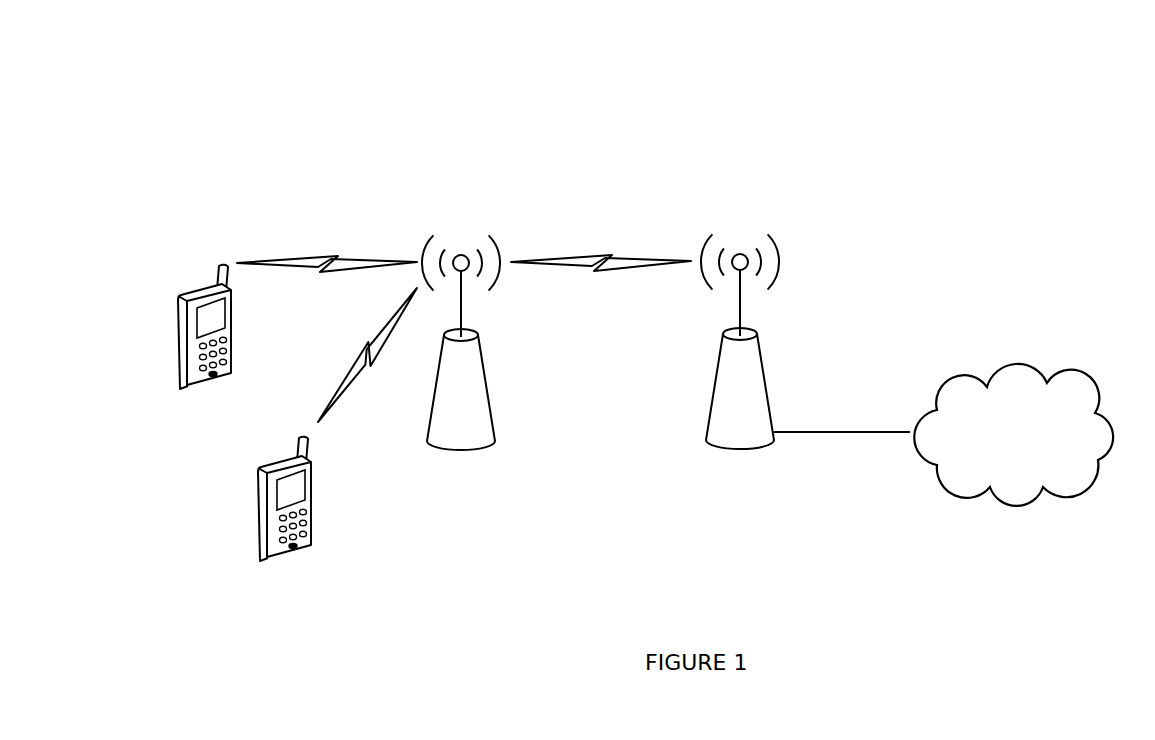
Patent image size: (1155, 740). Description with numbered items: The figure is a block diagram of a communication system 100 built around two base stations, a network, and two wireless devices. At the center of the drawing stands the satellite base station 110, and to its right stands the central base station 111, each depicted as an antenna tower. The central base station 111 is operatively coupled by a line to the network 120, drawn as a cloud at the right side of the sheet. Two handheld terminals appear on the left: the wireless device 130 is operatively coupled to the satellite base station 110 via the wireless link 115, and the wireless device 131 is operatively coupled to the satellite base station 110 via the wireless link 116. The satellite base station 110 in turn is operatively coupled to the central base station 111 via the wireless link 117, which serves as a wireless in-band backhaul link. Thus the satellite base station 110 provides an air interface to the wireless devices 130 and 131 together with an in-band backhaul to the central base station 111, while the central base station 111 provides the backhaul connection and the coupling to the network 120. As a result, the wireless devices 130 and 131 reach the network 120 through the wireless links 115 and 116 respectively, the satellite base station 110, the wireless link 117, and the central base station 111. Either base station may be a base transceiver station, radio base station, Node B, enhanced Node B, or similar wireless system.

The communication system 100 is at (192, 81).
The satellite base station 110 is at (460, 450).
The central base station 111 is at (738, 448).
The wireless link 115 is at (327, 255).
The wireless link 116 is at (363, 347).
The wireless link 117 is at (600, 252).
The network 120 is at (1004, 459).
The wireless device 130 is at (203, 384).
The wireless device 131 is at (283, 557).